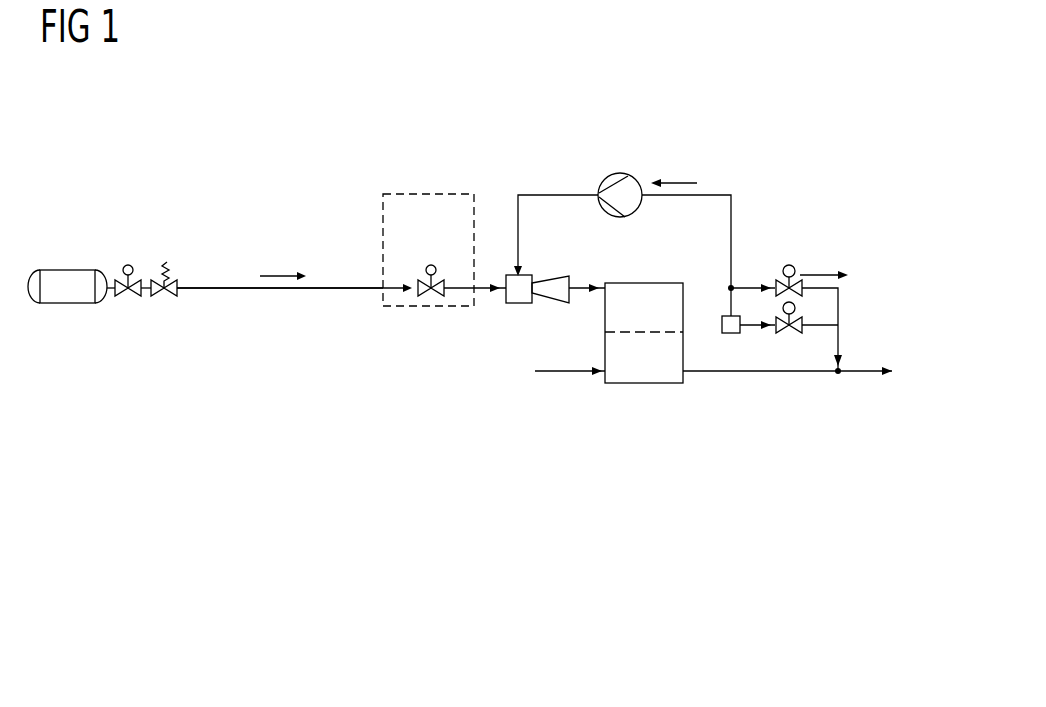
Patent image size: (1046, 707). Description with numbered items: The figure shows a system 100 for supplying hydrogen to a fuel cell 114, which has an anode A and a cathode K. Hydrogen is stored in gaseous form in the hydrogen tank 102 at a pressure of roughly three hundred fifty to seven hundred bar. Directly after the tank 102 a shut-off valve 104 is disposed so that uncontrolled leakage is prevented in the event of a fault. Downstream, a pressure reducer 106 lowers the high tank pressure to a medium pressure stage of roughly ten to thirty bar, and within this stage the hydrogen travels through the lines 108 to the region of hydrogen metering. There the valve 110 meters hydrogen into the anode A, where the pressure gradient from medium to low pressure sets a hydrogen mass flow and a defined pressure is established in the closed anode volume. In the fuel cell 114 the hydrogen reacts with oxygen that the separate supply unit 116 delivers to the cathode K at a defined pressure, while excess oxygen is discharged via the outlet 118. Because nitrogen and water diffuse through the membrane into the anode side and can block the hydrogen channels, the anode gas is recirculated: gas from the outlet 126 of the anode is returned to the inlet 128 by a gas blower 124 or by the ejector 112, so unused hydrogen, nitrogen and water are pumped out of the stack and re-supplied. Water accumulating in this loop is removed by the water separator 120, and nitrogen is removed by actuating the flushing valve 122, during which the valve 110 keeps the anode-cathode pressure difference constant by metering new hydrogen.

The system 100 is at (290, 156).
The hydrogen tank 102 is at (68, 304).
The shut-off valve 104 is at (128, 297).
The pressure reducer 106 is at (162, 297).
The lines 108 is at (280, 290).
The valve 110 is at (405, 308).
The ejector 112 is at (518, 304).
The fuel cell 114 is at (645, 384).
The supply unit 116 is at (557, 373).
The outlet 118 is at (735, 372).
The water separator 120 is at (785, 335).
The flushing valve 122 is at (785, 280).
The gas blower 124 is at (620, 173).
The outlet 126 is at (705, 286).
The inlet 128 is at (578, 285).